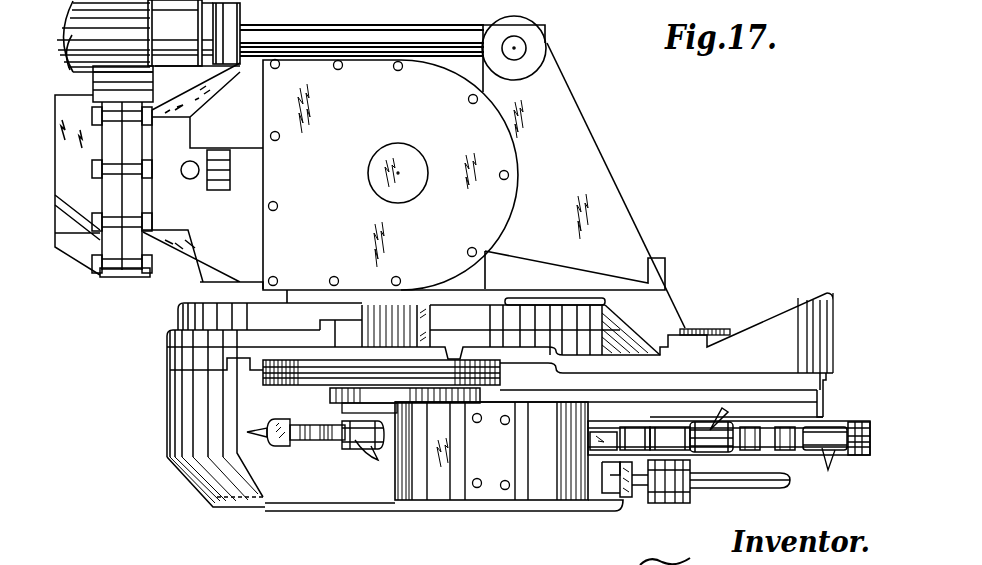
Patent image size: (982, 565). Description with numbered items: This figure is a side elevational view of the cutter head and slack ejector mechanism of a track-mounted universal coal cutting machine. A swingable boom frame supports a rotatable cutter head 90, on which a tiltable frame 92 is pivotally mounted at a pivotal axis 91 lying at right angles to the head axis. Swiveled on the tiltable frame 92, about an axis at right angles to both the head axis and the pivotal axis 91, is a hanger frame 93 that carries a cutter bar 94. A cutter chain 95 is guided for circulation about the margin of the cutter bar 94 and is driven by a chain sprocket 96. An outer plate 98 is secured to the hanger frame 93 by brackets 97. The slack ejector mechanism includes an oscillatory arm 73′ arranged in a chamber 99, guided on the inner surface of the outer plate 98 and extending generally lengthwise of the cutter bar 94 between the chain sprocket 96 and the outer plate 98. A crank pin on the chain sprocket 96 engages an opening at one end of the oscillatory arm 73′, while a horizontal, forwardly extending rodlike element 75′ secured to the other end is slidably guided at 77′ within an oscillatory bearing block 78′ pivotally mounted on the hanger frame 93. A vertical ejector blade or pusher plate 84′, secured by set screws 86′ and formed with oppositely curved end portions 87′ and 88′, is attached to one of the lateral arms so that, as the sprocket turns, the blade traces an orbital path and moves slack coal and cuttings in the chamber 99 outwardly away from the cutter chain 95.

The cutter head 90 is at (132, 265).
The pivotal axis 91 is at (405, 172).
The tiltable frame 92 is at (593, 273).
The hanger frame 93 is at (627, 363).
The cutter bar 94 is at (858, 457).
The cutter chain 95 is at (833, 440).
The chain sprocket 96 is at (333, 428).
The brackets 97 is at (220, 472).
The outer plate 98 is at (480, 505).
The chamber 99 is at (352, 473).
The curved end portion 88′ is at (397, 493).
The ejector blade 84′ is at (545, 477).
The curved end portion 87′ is at (583, 477).
The set screws 86′ is at (470, 478).
The oscillatory arm 73′ is at (612, 488).
The slide guide 77′ is at (656, 500).
The oscillatory bearing block 78′ is at (690, 503).
The rodlike element 75′ is at (747, 482).